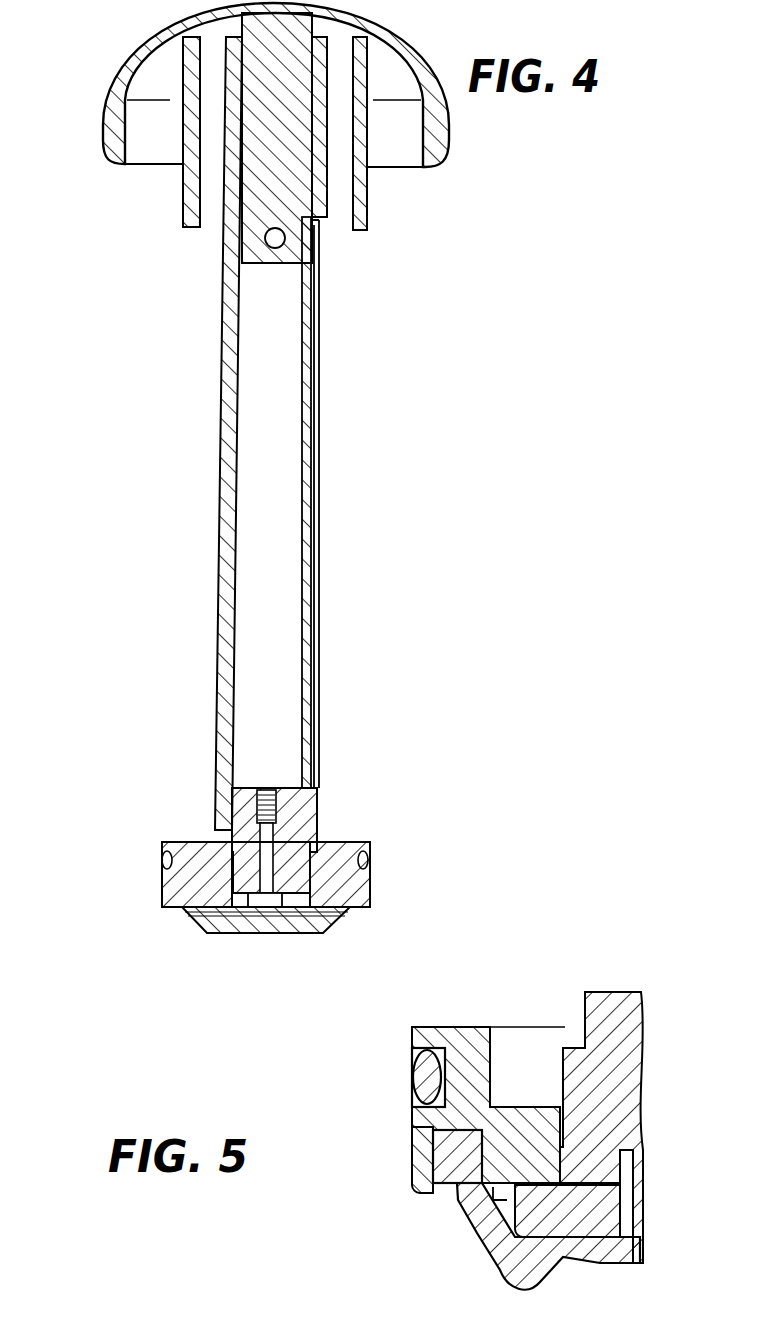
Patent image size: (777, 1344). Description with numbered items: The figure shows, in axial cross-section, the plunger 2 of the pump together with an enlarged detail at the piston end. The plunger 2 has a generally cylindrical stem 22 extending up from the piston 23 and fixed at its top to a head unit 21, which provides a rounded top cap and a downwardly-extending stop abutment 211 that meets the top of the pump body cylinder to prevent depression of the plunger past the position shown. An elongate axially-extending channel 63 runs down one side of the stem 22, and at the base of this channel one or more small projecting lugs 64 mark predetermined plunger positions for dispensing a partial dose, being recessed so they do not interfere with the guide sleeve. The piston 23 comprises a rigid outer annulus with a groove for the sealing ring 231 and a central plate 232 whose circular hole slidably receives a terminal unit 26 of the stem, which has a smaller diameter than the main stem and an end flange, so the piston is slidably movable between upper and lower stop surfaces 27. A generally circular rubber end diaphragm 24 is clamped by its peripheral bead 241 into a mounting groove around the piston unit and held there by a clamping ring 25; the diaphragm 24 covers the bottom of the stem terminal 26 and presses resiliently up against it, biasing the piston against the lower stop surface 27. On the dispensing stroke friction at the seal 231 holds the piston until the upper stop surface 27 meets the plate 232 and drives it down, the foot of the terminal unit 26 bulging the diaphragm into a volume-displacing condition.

In FIG. 4, the head unit 21 is at (147, 46).
In FIG. 4, the plunger 2 is at (212, 371).
In FIG. 4, the stop abutment 211 is at (370, 205).
In FIG. 4, the stem 22 is at (223, 518).
In FIG. 4, the channel 63 is at (305, 372).
In FIG. 4, the lugs 64 is at (307, 632).
In FIG. 4, the piston 23 is at (327, 880).
In FIG. 4, the stop surfaces 27 is at (197, 870).
In FIG. 5, the stop surfaces 27 is at (543, 1185).
In FIG. 4, the end diaphragm 24 is at (200, 933).
In FIG. 5, the end diaphragm 24 is at (503, 1272).
In FIG. 5, the central plate 232 is at (525, 1100).
In FIG. 5, the sealing ring 231 is at (410, 1088).
In FIG. 5, the peripheral bead 241 is at (410, 1123).
In FIG. 5, the terminal unit 26 is at (622, 1065).
In FIG. 5, the clamping ring 25 is at (457, 1190).